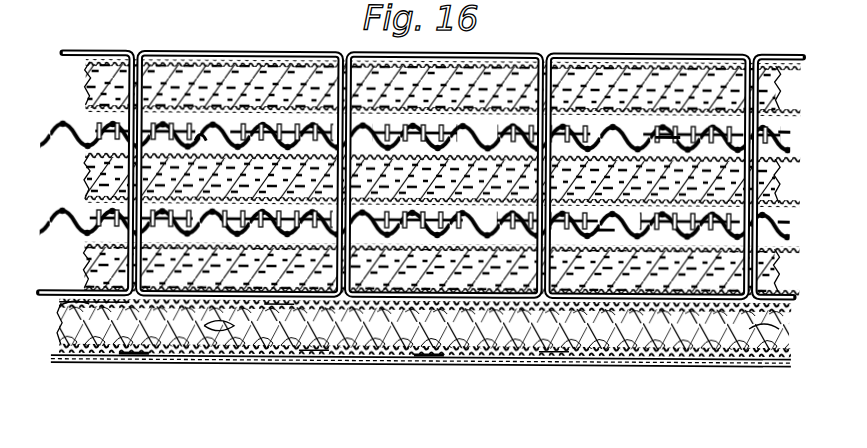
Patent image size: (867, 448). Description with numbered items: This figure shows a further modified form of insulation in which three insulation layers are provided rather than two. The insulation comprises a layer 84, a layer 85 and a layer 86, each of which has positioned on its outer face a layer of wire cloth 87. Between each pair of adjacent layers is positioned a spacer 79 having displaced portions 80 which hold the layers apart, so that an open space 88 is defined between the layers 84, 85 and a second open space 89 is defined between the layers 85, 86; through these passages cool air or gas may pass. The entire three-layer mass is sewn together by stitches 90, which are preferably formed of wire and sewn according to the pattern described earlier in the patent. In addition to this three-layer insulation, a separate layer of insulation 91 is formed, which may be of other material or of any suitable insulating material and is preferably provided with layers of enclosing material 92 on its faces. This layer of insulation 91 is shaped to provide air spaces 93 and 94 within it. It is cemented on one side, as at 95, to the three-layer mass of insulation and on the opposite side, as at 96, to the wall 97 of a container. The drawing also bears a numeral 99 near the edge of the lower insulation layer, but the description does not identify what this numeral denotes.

The spacer 79 is at (201, 130).
The displaced portions 80 is at (80, 141).
The layer 84 is at (86, 85).
The layer 85 is at (86, 177).
The layer 86 is at (86, 268).
The layer of wire cloth 87 is at (782, 72).
The open space 88 is at (668, 130).
The open space 89 is at (604, 240).
The stitches 90 is at (273, 53).
The layer of insulation 91 is at (222, 332).
The layer of enclosing material 92 is at (628, 354).
The air space 93 is at (405, 306).
The air space 94 is at (311, 356).
The cemented side 95 is at (281, 303).
The cemented side 96 is at (135, 358).
The wall 97 is at (578, 366).
The edge binding 99 is at (84, 305).